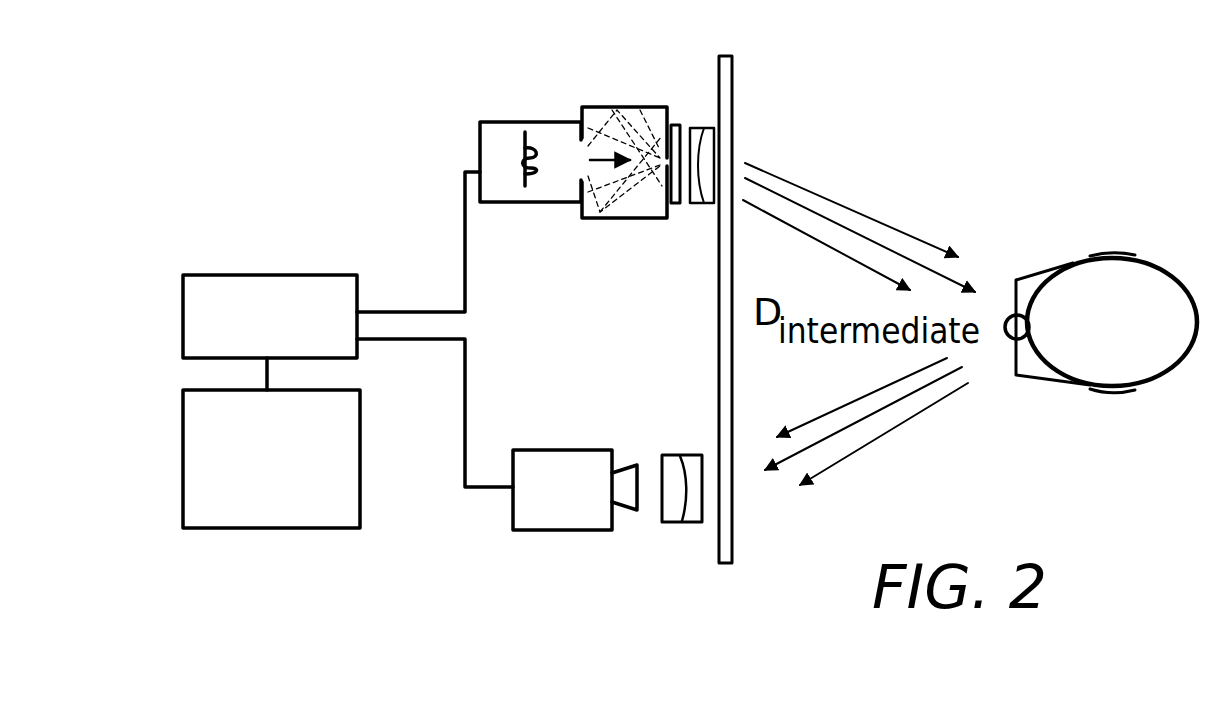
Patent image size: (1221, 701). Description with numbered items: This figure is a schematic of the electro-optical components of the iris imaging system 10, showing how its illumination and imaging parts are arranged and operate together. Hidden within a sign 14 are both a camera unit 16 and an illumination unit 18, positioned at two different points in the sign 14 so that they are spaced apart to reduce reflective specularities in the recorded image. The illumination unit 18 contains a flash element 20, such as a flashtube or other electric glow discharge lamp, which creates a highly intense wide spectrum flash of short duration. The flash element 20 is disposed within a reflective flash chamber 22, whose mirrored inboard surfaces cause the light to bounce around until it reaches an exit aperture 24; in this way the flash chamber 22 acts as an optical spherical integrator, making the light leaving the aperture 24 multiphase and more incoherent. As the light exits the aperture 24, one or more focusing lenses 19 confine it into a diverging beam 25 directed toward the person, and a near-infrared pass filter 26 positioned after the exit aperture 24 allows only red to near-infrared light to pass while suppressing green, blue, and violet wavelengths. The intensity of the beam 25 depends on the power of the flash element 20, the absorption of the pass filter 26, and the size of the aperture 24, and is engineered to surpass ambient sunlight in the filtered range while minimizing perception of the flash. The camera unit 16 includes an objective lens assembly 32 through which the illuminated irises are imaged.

The iris imaging system 10 is at (457, 102).
The sign 14 is at (733, 543).
The camera unit 16 is at (550, 531).
The illumination unit 18 is at (512, 121).
The focusing lenses 19 is at (697, 205).
The flash element 20 is at (523, 170).
The reflective flash chamber 22 is at (645, 205).
The exit aperture 24 is at (660, 157).
The diverging beam 25 is at (853, 210).
The near-infrared pass filter 26 is at (673, 124).
The objective lens assembly 32 is at (688, 523).